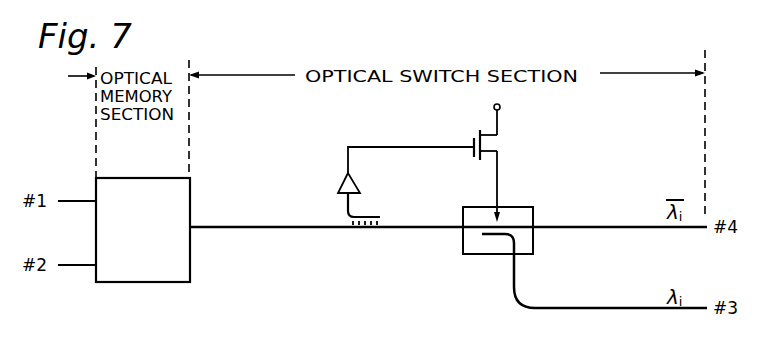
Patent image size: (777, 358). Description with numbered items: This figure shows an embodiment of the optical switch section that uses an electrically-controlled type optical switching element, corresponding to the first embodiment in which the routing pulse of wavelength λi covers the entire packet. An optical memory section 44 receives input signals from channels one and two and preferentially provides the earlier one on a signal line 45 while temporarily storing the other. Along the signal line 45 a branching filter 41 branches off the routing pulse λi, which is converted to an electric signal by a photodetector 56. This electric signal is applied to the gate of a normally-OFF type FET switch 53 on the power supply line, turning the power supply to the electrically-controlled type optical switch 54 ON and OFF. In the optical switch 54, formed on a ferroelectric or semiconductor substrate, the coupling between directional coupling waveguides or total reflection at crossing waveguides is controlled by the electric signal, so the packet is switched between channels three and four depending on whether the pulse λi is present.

The branching filter 41 is at (364, 232).
The optical memory section 44 is at (150, 178).
The signal line 45 is at (220, 231).
The FET switch 53 is at (472, 138).
The electrically-controlled type optical switch 54 is at (525, 207).
The photodetector 56 is at (358, 186).